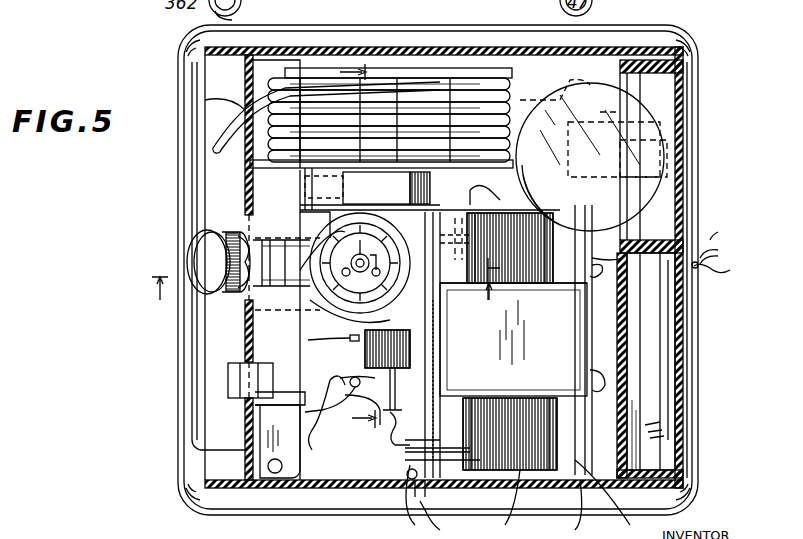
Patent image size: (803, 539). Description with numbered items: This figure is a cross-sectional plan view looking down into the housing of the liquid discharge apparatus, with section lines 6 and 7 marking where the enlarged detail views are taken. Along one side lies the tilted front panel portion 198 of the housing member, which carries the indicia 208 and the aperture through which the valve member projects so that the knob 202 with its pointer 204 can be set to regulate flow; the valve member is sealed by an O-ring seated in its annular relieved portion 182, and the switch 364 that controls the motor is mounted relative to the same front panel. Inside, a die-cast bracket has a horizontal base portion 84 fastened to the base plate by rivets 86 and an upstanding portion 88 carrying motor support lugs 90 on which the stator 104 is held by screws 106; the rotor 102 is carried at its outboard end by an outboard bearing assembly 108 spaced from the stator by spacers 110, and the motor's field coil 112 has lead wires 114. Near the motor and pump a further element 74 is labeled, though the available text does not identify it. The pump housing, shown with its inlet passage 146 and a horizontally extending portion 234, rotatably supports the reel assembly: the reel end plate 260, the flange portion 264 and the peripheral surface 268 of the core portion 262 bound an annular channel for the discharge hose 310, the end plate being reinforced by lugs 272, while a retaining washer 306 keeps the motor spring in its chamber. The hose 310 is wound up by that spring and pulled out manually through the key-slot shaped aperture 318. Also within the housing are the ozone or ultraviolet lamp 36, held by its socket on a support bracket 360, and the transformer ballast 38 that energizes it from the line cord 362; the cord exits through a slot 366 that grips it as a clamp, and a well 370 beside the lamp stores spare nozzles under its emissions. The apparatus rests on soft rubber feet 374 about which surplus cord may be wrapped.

The section line 6— 6 is at (322, 307).
The section line 7— 7 is at (366, 253).
The ozone or ultraviolet generating lamp 36 is at (640, 98).
The transformer ballast 38 is at (300, 427).
The mounting plate 74 is at (300, 327).
The base portion 84 is at (400, 442).
The rivets 86 is at (340, 385).
The upstanding portion 88 is at (378, 428).
The motor support lugs 90 is at (445, 215).
The rotor 102 is at (350, 340).
The stator 104 is at (510, 468).
The screws 106 is at (582, 255).
The outboard bearing assembly 108 is at (582, 268).
The spacers 110 is at (570, 218).
The field coil 112 is at (627, 320).
The lead wires 114 is at (580, 310).
The inlet passage 146 is at (430, 191).
The annular relieved portion 182 is at (330, 235).
The front panel portion 198 is at (205, 178).
The knob 202 is at (190, 262).
The pointer 204 is at (300, 280).
The indicia 208 is at (225, 232).
The horizontally extending portion 234 is at (305, 185).
The reel end plate 260 is at (431, 87).
The core portion 262 is at (513, 238).
The flange portion 264 is at (470, 190).
The peripheral surface 268 is at (555, 84).
The lugs 272 is at (342, 68).
The retaining washer 306 is at (303, 212).
The discharge hose 310 is at (215, 142).
The key slot shaped aperture 318 is at (326, 117).
The support bracket 360 is at (668, 133).
The line cord 362 is at (726, 276).
The switch 364 is at (228, 393).
The slot 366 is at (725, 242).
The well 370 is at (650, 320).
The feet 374 is at (237, 17).